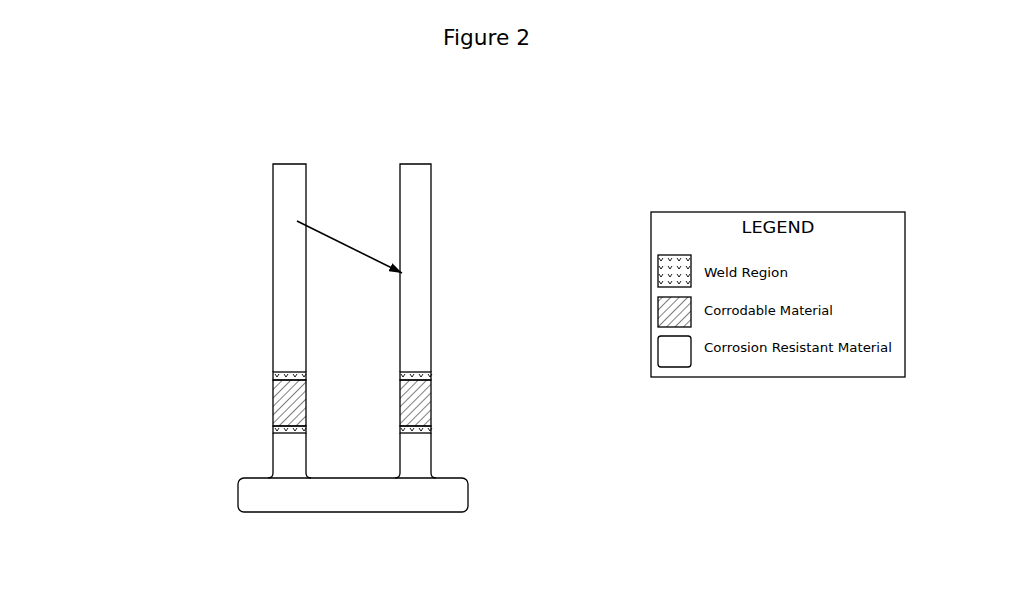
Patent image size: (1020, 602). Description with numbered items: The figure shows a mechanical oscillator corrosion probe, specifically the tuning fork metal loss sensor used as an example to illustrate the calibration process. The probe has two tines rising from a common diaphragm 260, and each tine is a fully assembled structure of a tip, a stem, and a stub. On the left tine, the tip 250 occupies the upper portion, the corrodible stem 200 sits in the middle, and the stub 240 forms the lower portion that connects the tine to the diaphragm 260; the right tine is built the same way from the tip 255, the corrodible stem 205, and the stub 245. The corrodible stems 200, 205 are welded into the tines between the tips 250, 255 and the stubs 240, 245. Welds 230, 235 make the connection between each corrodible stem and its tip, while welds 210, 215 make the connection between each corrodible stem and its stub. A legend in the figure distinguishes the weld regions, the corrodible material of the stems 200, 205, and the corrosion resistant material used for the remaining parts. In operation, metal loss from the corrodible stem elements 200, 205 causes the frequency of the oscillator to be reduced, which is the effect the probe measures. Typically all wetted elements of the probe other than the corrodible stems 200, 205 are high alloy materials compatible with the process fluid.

The tip 250 is at (270, 252).
The tip 255 is at (438, 252).
The weld 230 is at (270, 369).
The weld 235 is at (438, 369).
The corrodible stem element 200 is at (270, 400).
The corrodible stem element 205 is at (438, 400).
The weld 210 is at (270, 427).
The weld 215 is at (438, 427).
The stub 240 is at (270, 455).
The stub 245 is at (438, 455).
The diaphragm 260 is at (460, 476).